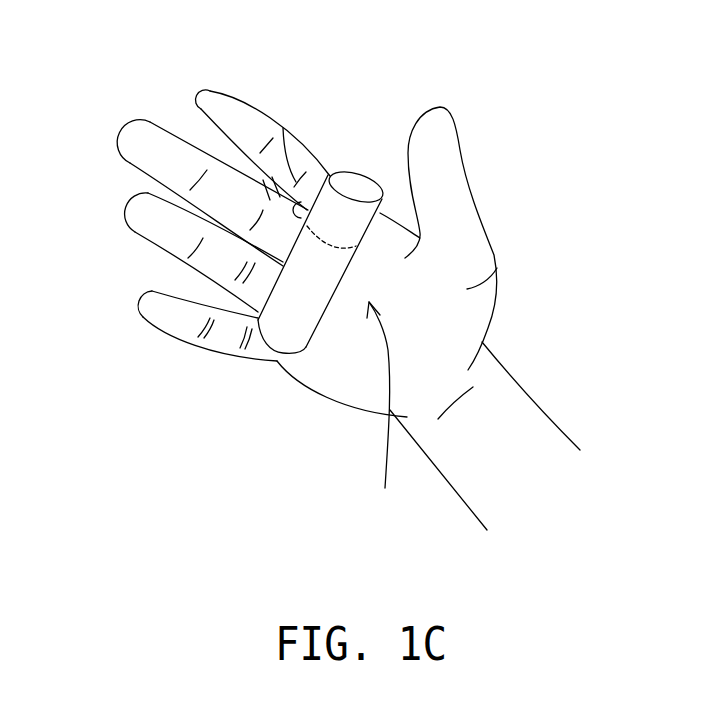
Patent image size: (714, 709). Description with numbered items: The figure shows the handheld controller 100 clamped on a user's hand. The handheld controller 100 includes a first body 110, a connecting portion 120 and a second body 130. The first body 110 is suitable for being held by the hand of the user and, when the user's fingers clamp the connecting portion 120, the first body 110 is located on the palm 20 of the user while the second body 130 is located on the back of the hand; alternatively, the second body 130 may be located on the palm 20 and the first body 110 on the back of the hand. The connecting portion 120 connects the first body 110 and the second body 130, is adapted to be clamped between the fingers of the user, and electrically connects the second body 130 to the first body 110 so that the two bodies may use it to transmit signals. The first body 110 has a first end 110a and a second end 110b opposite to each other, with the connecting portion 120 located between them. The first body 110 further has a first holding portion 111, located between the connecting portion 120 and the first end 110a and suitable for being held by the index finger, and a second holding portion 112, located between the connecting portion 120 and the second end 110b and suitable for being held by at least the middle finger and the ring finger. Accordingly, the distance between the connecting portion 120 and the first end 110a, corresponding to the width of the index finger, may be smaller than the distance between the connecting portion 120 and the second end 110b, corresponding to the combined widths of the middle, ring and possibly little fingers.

The palm 20 is at (467, 288).
The handheld controller 100 is at (384, 416).
The first body 110 is at (315, 243).
The first end 110a is at (357, 186).
The second end 110b is at (274, 352).
The first holding portion 111 is at (318, 190).
The second holding portion 112 is at (297, 277).
The connecting portion 120 is at (238, 93).
The second body 130 is at (260, 178).